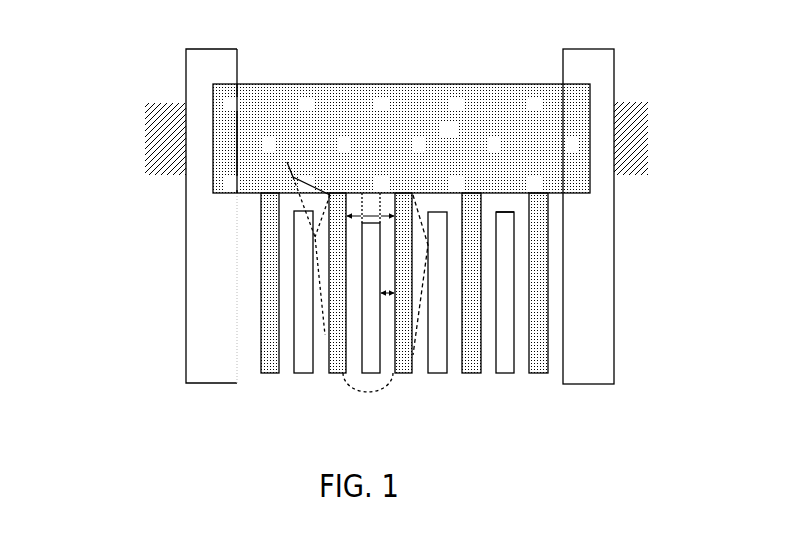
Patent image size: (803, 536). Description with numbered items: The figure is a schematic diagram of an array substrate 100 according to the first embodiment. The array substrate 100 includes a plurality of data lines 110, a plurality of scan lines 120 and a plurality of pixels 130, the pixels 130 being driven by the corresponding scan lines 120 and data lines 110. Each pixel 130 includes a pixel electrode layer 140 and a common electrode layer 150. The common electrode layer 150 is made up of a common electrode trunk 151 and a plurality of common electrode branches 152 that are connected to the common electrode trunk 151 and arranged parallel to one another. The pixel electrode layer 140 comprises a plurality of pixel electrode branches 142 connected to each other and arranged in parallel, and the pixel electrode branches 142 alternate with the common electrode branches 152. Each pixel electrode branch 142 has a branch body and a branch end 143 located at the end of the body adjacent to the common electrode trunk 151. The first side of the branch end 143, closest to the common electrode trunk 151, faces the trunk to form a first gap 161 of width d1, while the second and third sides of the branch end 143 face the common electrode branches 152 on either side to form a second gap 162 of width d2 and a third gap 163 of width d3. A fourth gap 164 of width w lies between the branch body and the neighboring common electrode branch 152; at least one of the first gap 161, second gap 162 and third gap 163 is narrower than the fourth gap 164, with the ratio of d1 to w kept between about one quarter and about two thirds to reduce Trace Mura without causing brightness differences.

The array substrate 100 is at (147, 67).
The data line 110 is at (208, 278).
The scan line 120 is at (165, 152).
The pixel 130 is at (553, 290).
The pixel electrode layer 140 is at (508, 373).
The pixel electrode branch 142 is at (370, 345).
The branch end 143 is at (510, 218).
The common electrode layer 150 is at (512, 85).
The common electrode trunk 151 is at (450, 130).
The common electrode branch 152 is at (273, 355).
The first gap 161 is at (352, 197).
The second gap 162 is at (227, 267).
The third gap 163 is at (400, 192).
The fourth gap 164 is at (385, 308).